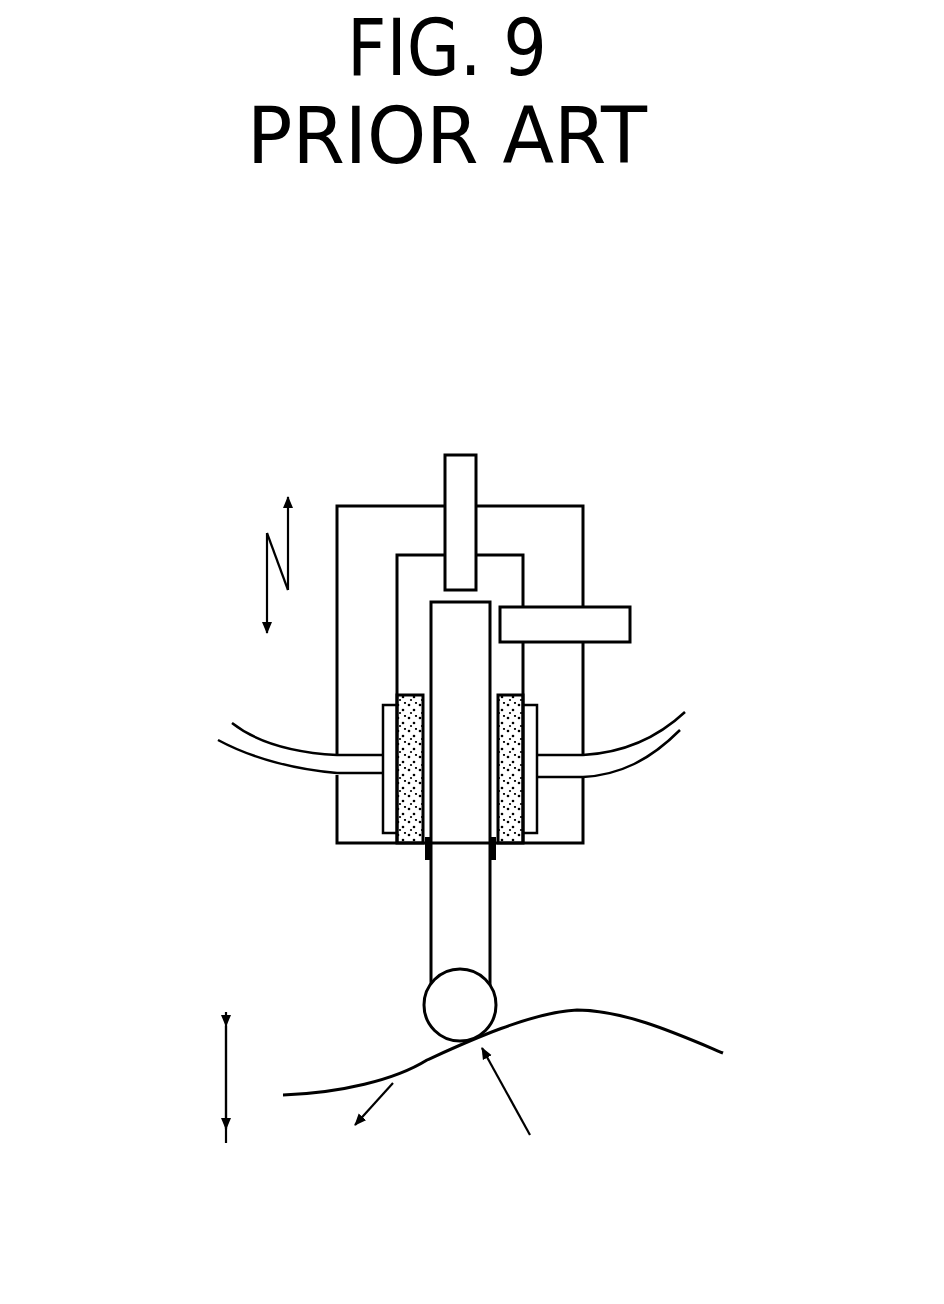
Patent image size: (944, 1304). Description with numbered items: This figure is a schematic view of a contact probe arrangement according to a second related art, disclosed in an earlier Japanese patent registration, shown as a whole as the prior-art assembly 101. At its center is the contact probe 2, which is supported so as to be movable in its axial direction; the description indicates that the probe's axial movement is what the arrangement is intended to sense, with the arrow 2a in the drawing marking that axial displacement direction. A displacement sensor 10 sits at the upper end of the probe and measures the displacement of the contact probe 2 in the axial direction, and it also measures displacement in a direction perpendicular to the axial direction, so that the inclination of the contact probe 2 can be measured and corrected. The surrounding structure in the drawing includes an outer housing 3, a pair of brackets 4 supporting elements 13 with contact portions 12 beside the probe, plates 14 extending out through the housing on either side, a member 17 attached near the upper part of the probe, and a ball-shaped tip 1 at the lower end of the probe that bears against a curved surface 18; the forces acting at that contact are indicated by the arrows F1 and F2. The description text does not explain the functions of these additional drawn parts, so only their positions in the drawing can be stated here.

The ball contact member 1 is at (443, 1013).
The contact probe 2 is at (485, 950).
The shaft displacement direction 2a is at (223, 1085).
The housing 3 is at (525, 512).
The support bracket 4 is at (390, 805).
The displacement sensor 10 is at (457, 465).
The contact portion 12 is at (427, 858).
The piezoelectric element 13 is at (408, 845).
The plate spring 14 is at (250, 757).
The weight member 17 is at (617, 607).
The driven surface 18 is at (677, 1033).
The prior art vibration actuator 101 is at (680, 460).
The pressing force F1 is at (533, 1106).
The reaction force F2 is at (362, 1131).